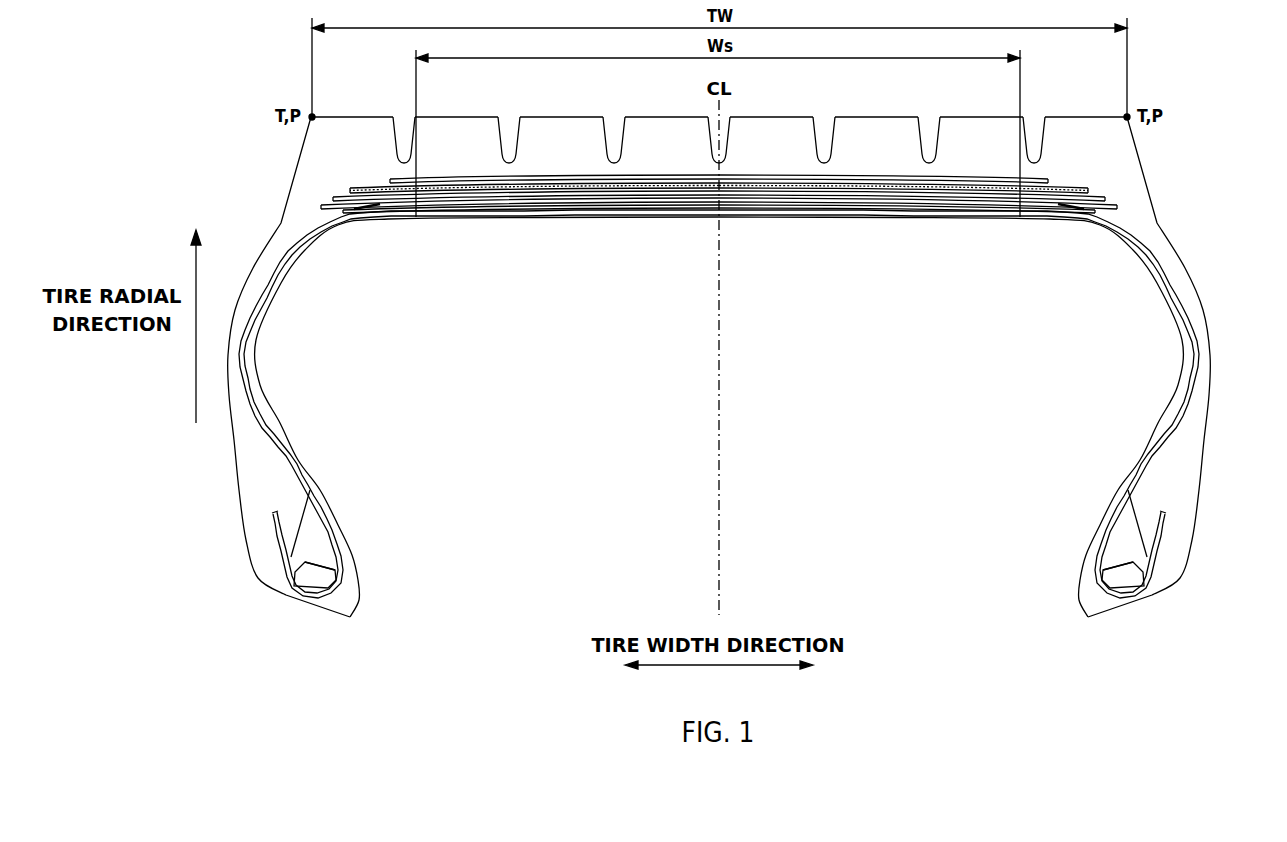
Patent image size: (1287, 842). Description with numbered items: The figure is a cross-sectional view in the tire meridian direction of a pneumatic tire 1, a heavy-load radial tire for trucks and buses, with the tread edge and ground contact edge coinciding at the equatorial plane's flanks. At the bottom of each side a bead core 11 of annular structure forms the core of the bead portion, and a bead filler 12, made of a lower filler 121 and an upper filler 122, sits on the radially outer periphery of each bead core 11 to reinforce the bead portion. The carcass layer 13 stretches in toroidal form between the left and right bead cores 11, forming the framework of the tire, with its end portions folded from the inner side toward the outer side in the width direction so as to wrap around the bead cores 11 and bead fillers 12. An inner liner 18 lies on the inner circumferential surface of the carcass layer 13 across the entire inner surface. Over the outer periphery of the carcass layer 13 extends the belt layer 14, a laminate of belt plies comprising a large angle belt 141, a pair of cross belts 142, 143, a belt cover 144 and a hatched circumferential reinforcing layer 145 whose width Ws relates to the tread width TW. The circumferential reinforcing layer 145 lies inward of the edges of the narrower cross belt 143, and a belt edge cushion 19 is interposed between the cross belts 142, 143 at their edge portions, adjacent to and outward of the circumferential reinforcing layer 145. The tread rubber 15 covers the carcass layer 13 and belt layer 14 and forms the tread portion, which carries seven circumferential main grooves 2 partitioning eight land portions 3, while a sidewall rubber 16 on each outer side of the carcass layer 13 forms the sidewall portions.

The pneumatic tire 1 is at (1234, 155).
The circumferential main groove 2 is at (1035, 124).
The land portion 3 is at (1068, 117).
The bead core 11 is at (1113, 575).
The bead filler 12 is at (1245, 561).
The lower filler 121 is at (1128, 543).
The upper filler 122 is at (1147, 502).
The carcass layer 13 is at (1147, 455).
The belt layer 14 is at (762, 268).
The large angle belt 141 is at (984, 204).
The cross belt 142 is at (935, 199).
The cross belt 143 is at (885, 195).
The belt cover 144 is at (835, 192).
The circumferential reinforcing layer 145 is at (785, 190).
The tread rubber 15 is at (1092, 109).
The sidewall rubber 16 is at (1157, 218).
The inner liner 18 is at (1110, 233).
The belt edge cushion 19 is at (1077, 209).